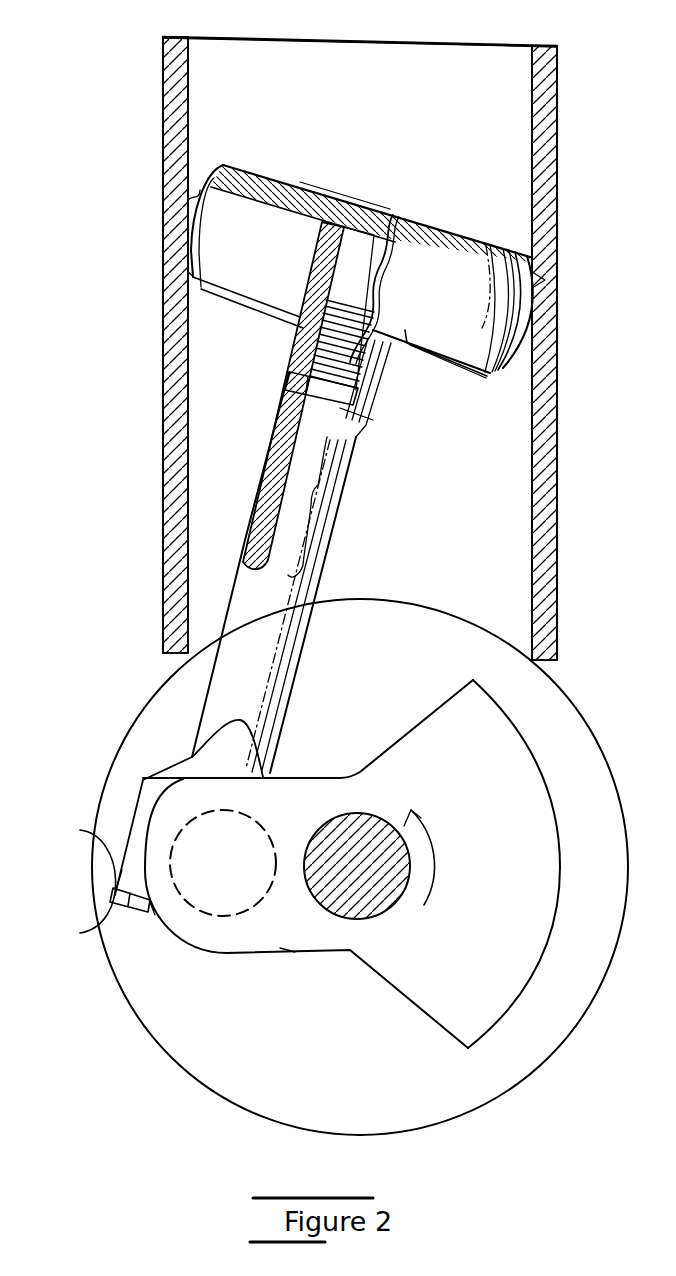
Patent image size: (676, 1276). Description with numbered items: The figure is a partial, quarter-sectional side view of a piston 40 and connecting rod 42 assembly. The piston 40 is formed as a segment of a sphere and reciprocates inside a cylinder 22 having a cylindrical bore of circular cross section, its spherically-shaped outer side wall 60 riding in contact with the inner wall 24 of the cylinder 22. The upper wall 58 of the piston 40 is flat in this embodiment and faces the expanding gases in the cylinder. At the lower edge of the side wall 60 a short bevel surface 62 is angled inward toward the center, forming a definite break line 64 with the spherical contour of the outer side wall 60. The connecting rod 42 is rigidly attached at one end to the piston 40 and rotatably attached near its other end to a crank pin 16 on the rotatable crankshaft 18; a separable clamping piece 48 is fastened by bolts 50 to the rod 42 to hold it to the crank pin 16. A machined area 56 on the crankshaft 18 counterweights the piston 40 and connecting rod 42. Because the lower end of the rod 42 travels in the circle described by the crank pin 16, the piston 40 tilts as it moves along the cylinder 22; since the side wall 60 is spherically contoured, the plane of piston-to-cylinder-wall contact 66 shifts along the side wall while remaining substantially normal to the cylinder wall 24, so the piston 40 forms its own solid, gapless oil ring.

The crank pin 16 is at (212, 905).
The crankshaft 18 is at (380, 905).
The cylinder 22 is at (547, 47).
The inner wall of cylinder 24 is at (532, 62).
The piston 40 is at (440, 240).
The connecting rod 42 is at (318, 568).
The separable clamping piece 48 is at (100, 833).
The bolts 50 is at (102, 930).
The machined area 56 is at (550, 785).
The upper wall 58 is at (325, 196).
The outer side wall 60 is at (163, 202).
The bevel surface 62 is at (467, 370).
The break line 64 is at (408, 342).
The plane of piston-to-cylinder-wall contact 66 is at (163, 273).